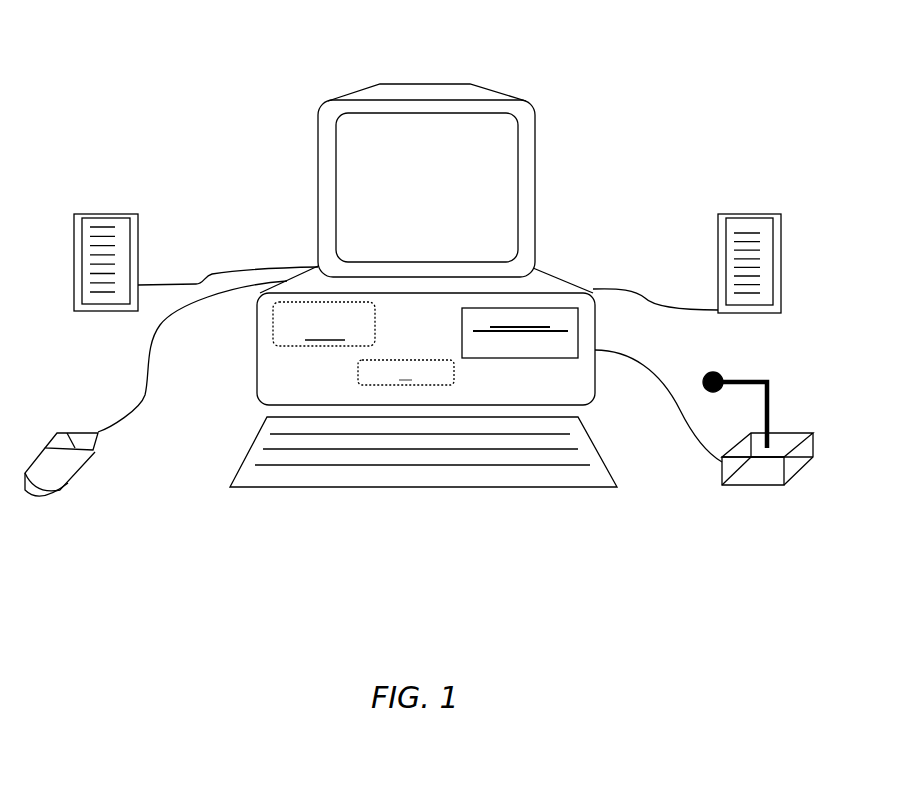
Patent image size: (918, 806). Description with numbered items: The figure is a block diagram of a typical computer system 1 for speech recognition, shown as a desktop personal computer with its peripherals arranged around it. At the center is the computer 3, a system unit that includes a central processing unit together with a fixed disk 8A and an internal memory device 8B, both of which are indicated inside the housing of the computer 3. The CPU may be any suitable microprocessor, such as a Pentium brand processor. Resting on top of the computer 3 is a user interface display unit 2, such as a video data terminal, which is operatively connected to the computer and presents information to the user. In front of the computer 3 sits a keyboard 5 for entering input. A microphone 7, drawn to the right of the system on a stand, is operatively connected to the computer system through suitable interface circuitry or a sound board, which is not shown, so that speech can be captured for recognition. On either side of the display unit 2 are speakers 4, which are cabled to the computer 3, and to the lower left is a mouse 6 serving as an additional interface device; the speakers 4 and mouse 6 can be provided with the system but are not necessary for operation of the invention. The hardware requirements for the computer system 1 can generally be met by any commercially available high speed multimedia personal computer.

The computer system 1 is at (276, 112).
The user interface display unit 2 is at (534, 190).
The computer 3 is at (534, 266).
The speakers 4 is at (74, 262).
The keyboard 5 is at (423, 487).
The mouse 6 is at (90, 460).
The microphone 7 is at (785, 484).
The fixed disk 8A is at (273, 331).
The internal memory device 8B is at (358, 372).